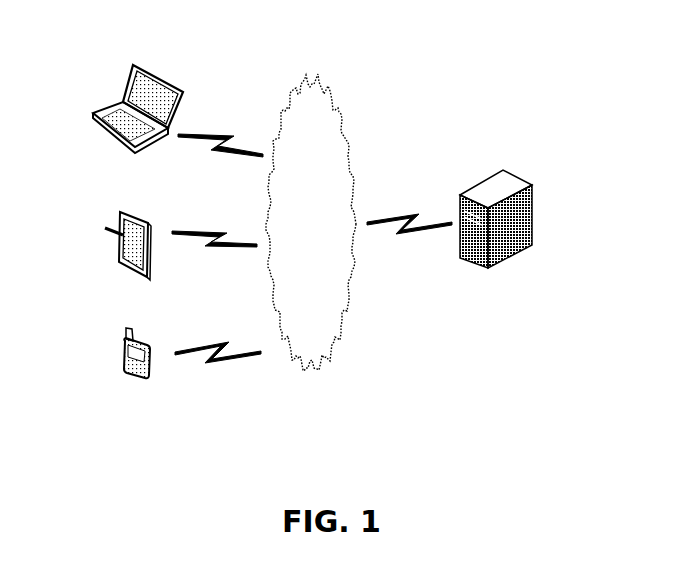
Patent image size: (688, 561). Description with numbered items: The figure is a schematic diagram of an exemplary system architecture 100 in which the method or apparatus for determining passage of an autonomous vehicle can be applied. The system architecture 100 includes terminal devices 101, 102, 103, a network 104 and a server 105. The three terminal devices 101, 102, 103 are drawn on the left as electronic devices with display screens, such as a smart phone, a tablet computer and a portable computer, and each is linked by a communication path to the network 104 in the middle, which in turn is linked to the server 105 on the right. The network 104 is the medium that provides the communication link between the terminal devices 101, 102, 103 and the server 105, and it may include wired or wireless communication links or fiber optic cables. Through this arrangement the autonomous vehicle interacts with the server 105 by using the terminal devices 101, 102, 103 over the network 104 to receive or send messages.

The system architecture 100 is at (568, 48).
The terminal device 101 is at (118, 370).
The terminal device 102 is at (117, 250).
The terminal device 103 is at (93, 118).
The network 104 is at (311, 222).
The server 105 is at (533, 214).